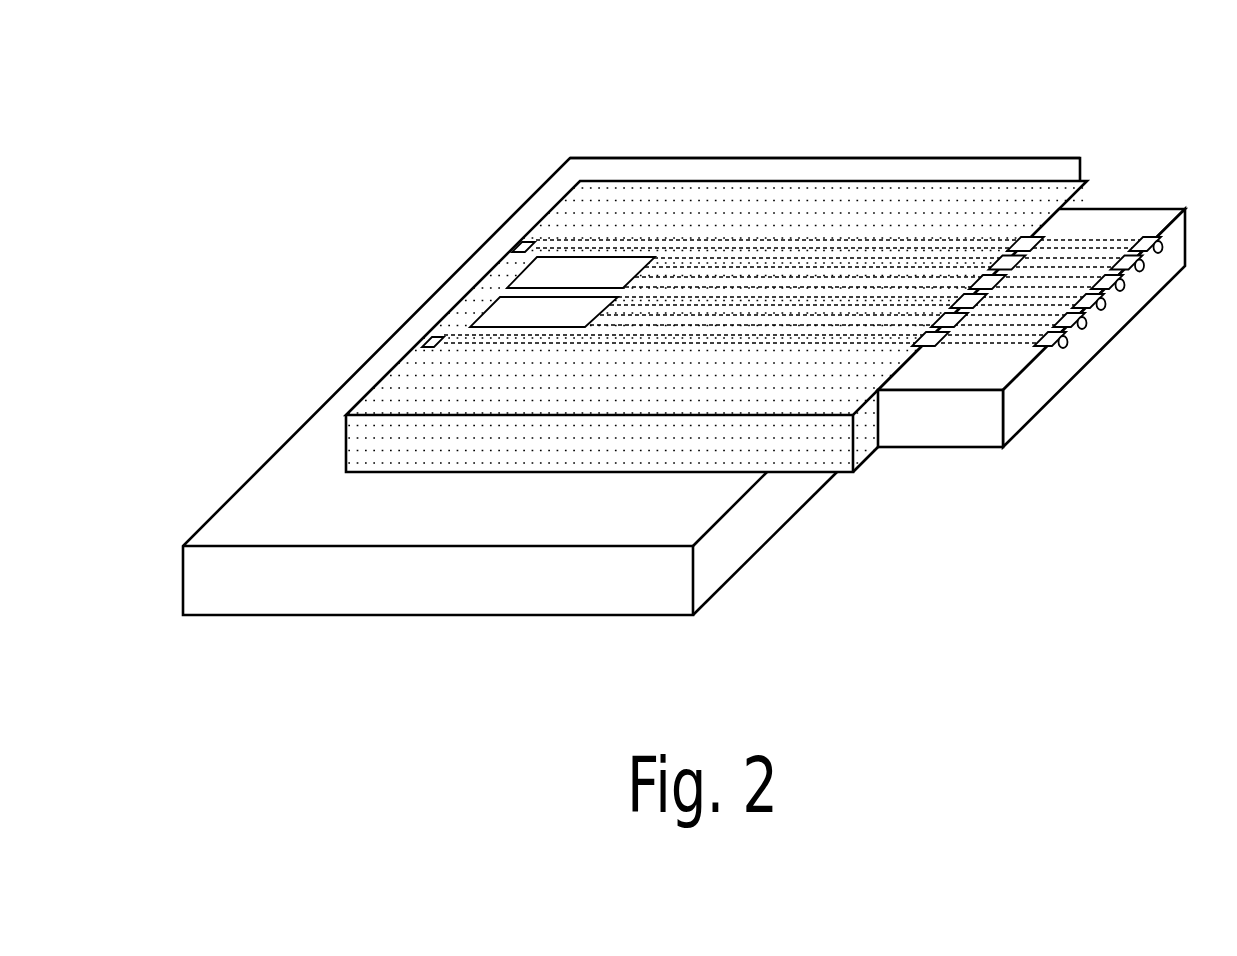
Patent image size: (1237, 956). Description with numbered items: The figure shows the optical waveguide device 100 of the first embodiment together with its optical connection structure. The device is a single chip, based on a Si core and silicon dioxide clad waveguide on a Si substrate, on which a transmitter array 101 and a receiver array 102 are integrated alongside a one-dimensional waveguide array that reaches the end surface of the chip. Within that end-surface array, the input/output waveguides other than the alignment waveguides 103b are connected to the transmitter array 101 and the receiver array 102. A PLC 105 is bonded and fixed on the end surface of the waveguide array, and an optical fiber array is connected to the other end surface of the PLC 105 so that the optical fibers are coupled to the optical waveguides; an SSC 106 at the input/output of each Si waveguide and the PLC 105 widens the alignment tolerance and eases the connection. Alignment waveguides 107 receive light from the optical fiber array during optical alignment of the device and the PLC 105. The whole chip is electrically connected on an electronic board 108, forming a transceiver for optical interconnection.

The optical waveguide device 100 is at (872, 200).
The transmitter array 101 is at (495, 312).
The receiver array 102 is at (545, 273).
The alignment waveguides 103b is at (765, 342).
The PLC 105 is at (922, 431).
The SSC 106 is at (1022, 238).
The alignment waveguides 107 is at (1162, 250).
The electronic board 108 is at (577, 600).